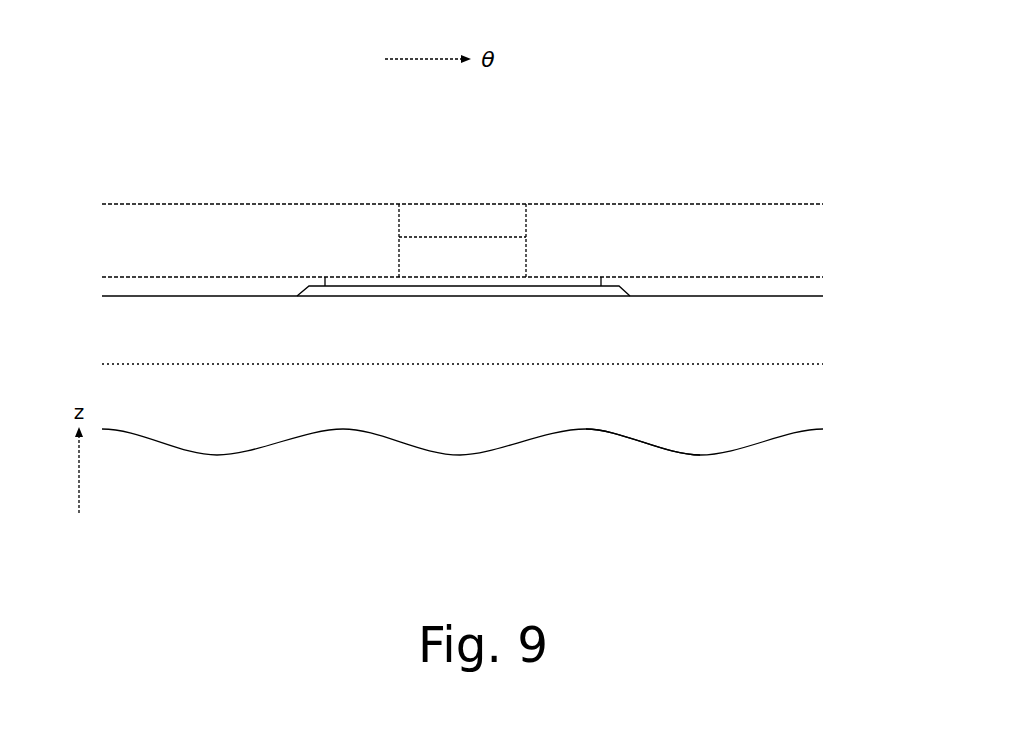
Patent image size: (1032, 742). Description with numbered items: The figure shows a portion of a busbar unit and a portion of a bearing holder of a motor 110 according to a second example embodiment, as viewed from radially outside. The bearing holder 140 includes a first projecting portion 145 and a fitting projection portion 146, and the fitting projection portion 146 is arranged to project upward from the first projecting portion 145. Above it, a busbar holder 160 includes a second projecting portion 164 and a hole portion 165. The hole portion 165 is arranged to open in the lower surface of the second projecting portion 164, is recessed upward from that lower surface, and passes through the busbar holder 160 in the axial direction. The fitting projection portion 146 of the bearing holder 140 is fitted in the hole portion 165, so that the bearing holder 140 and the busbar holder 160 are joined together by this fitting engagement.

The motor 110 is at (720, 110).
The bearing holder 140 is at (745, 459).
The first projecting portion 145 is at (605, 296).
The fitting projection portion 146 is at (492, 248).
The busbar holder 160 is at (768, 198).
The second projecting portion 164 is at (580, 286).
The hole portion 165 is at (399, 218).